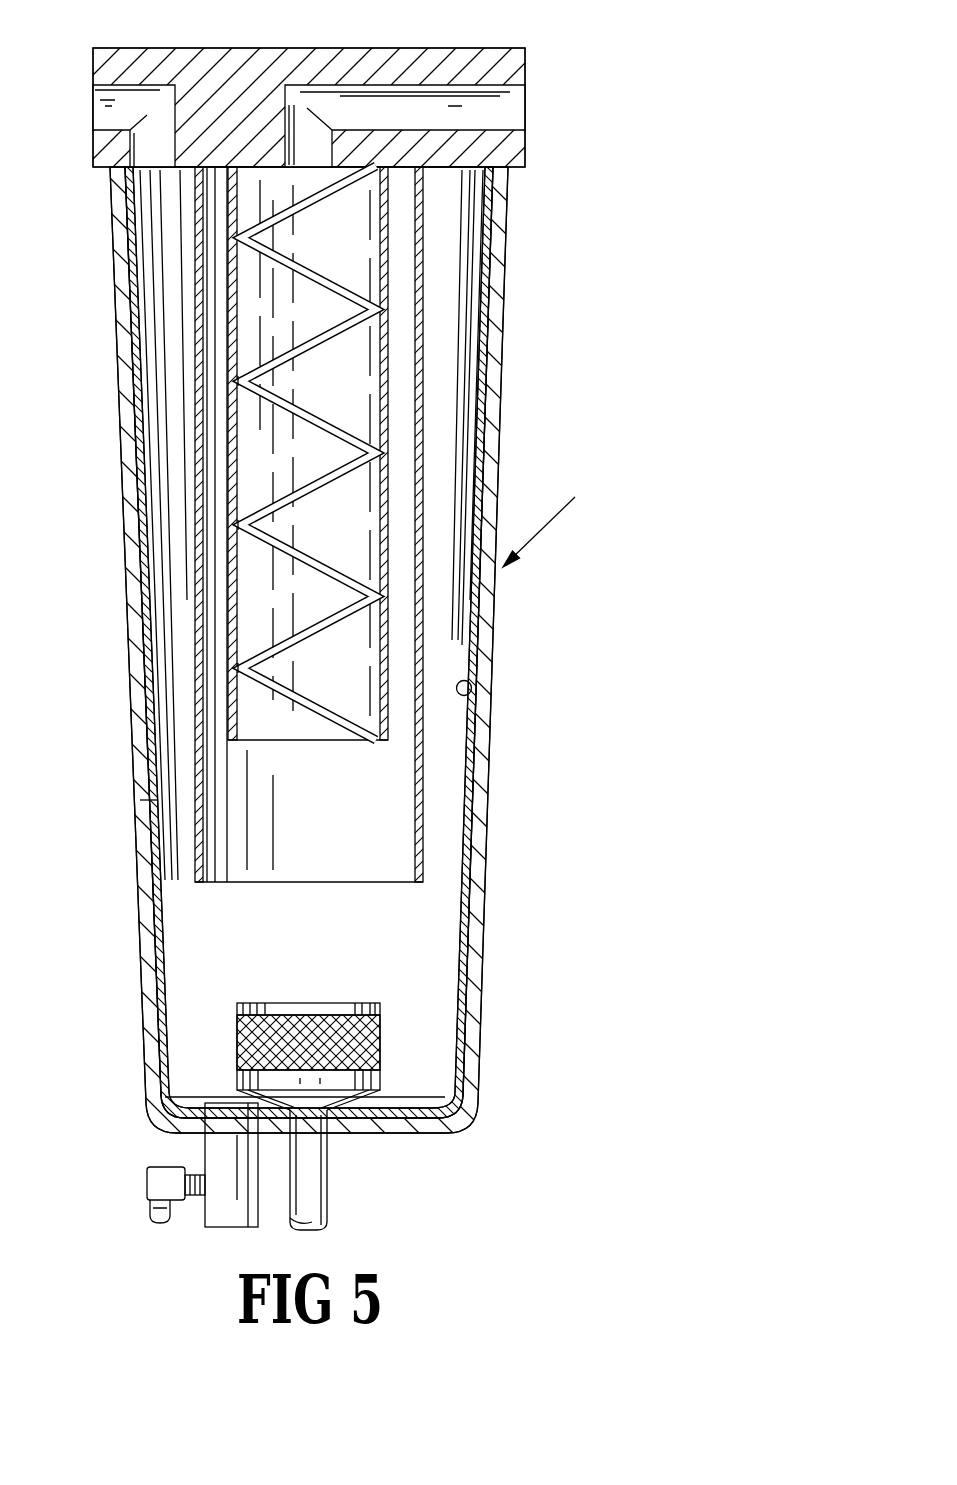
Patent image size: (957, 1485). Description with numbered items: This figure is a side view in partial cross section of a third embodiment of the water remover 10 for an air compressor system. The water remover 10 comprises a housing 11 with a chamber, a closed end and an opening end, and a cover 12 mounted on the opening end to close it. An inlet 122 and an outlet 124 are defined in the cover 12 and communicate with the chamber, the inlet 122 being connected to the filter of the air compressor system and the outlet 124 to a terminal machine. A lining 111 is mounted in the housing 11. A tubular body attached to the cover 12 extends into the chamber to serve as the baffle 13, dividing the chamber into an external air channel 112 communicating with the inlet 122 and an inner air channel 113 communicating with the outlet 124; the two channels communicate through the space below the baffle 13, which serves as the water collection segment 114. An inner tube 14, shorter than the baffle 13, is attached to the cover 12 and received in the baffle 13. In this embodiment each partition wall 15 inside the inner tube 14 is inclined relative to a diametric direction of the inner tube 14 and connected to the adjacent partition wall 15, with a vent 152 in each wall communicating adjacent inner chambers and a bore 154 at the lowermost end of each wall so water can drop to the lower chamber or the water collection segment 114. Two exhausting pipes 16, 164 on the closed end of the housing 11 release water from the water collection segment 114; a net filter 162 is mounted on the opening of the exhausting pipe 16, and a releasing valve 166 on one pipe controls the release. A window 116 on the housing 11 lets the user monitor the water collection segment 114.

The water remover 10 is at (541, 514).
The housing 11 is at (478, 630).
The lining 111 is at (471, 695).
The external air channel 112 is at (455, 468).
The inner air channel 113 is at (390, 813).
The water collection segment 114 is at (418, 940).
The window 116 is at (155, 860).
The cover 12 is at (418, 68).
The inlet 122 is at (117, 98).
The outlet 124 is at (518, 118).
The baffle 13 is at (417, 297).
The inner tube 14 is at (385, 392).
The partition wall 15 is at (300, 490).
The vent 152 is at (360, 473).
The bore 154 is at (240, 530).
The exhausting pipe 16 is at (315, 1175).
The net filter 162 is at (363, 1038).
The exhausting pipe 164 is at (225, 1118).
The releasing valve 166 is at (165, 1180).